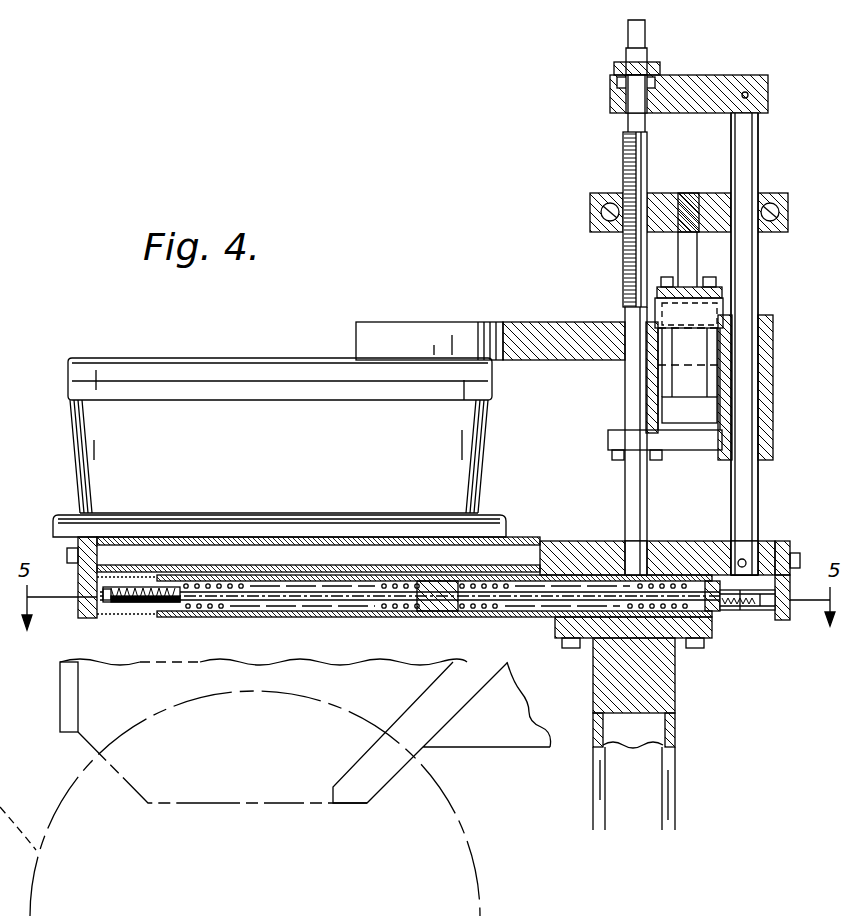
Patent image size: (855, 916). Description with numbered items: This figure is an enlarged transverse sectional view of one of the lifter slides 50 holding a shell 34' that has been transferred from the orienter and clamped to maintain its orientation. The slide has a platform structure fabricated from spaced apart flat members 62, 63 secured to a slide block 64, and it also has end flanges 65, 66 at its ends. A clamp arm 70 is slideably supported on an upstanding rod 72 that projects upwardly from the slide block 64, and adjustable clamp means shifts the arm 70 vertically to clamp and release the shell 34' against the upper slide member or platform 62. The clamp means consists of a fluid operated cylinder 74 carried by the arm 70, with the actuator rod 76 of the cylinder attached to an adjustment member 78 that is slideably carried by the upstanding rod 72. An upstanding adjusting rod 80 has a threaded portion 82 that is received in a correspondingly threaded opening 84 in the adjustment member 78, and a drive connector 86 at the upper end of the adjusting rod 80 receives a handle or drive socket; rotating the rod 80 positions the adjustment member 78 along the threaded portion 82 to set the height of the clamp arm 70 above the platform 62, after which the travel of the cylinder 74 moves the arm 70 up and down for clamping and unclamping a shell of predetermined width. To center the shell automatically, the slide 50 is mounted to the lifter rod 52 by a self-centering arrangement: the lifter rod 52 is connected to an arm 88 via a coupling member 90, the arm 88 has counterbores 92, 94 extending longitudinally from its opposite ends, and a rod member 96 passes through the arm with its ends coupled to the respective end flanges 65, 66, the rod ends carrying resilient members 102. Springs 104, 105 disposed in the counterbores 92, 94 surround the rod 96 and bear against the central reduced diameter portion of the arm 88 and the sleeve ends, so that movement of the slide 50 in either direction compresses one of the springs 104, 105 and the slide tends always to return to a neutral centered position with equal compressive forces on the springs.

The shell 34' is at (267, 422).
The lifter slide 50 is at (530, 530).
The lifter rod 52 is at (675, 785).
The flat member 62 is at (180, 537).
The flat member 63 is at (236, 565).
The slide block 64 is at (596, 547).
The end flange 65 is at (88, 618).
The end flange 66 is at (789, 620).
The clamp arm 70 is at (432, 330).
The upstanding rod 72 is at (752, 502).
The fluid operated cylinder 74 is at (672, 378).
The actuator rod 76 is at (697, 266).
The adjustment member 78 is at (592, 212).
The adjusting rod 80 is at (628, 126).
The threaded portion 82 is at (627, 168).
The threaded opening 84 is at (630, 228).
The drive connector 86 is at (628, 34).
The arm 88 is at (436, 610).
The coupling member 90 is at (675, 686).
The counterbore 92 is at (272, 602).
The counterbore 94 is at (524, 605).
The rod member 96 is at (341, 600).
The resilient member 102 is at (128, 602).
The spring 104 is at (214, 607).
The spring 105 is at (474, 608).